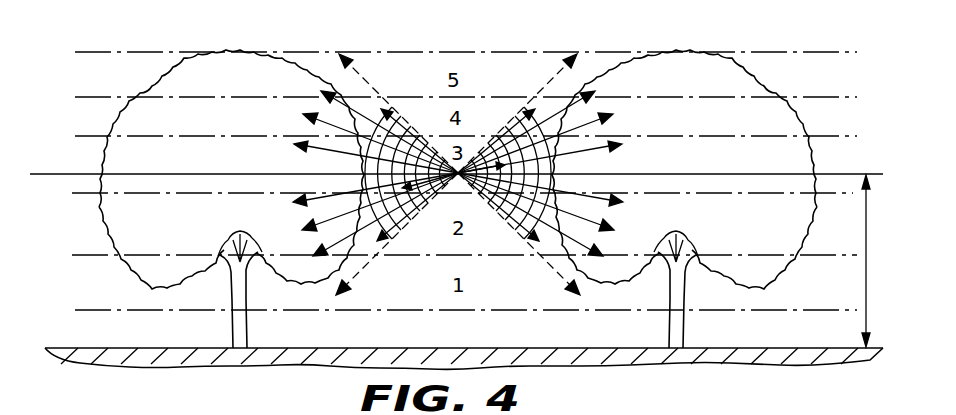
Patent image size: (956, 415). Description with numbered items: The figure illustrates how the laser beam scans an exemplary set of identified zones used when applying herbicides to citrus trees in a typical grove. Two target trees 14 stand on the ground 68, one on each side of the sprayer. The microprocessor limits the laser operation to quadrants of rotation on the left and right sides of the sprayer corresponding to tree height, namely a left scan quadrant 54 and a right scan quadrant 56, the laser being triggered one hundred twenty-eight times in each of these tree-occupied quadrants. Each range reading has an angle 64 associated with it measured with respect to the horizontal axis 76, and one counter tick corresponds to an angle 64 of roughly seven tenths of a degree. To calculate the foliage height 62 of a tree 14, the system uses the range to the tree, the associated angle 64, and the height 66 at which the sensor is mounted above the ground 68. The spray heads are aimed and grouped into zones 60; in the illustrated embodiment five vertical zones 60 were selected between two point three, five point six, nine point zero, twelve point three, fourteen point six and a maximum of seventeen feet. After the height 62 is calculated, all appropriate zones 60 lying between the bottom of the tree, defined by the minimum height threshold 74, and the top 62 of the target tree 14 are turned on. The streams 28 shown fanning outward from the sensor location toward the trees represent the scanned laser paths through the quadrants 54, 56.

The target tree 14 is at (160, 84).
The spray streams 28 is at (340, 92).
The left scan quadrant 54 is at (363, 125).
The right scan quadrant 56 is at (557, 100).
The spray zones 60 is at (847, 72).
The tree foliage height 62 is at (163, 52).
The angle 64 is at (513, 132).
The sensor mounting height 66 is at (866, 277).
The ground 68 is at (418, 328).
The minimum height threshold 74 is at (45, 328).
The horizontal axis 76 is at (79, 152).